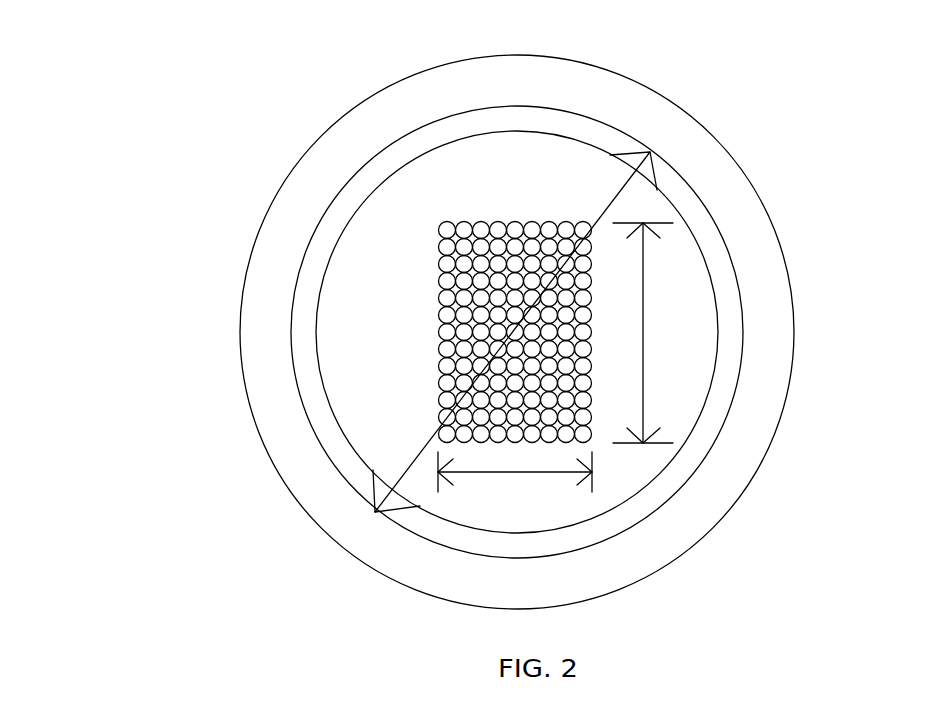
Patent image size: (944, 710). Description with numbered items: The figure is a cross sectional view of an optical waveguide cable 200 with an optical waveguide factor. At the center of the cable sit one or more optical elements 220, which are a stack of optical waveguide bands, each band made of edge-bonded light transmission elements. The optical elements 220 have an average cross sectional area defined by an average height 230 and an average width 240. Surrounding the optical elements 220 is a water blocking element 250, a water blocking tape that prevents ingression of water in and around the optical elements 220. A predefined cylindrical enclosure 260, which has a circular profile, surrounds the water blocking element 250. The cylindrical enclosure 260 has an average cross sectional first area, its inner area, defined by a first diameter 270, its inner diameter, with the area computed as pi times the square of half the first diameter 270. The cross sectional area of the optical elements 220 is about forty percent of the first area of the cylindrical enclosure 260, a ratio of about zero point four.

The optical waveguide cable 200 is at (63, 37).
The optical elements 220 is at (465, 282).
The average height 230 is at (643, 292).
The average width 240 is at (517, 473).
The water blocking element 250 is at (353, 470).
The predefined cylindrical enclosure 260 is at (280, 383).
The first diameter 270 is at (598, 228).